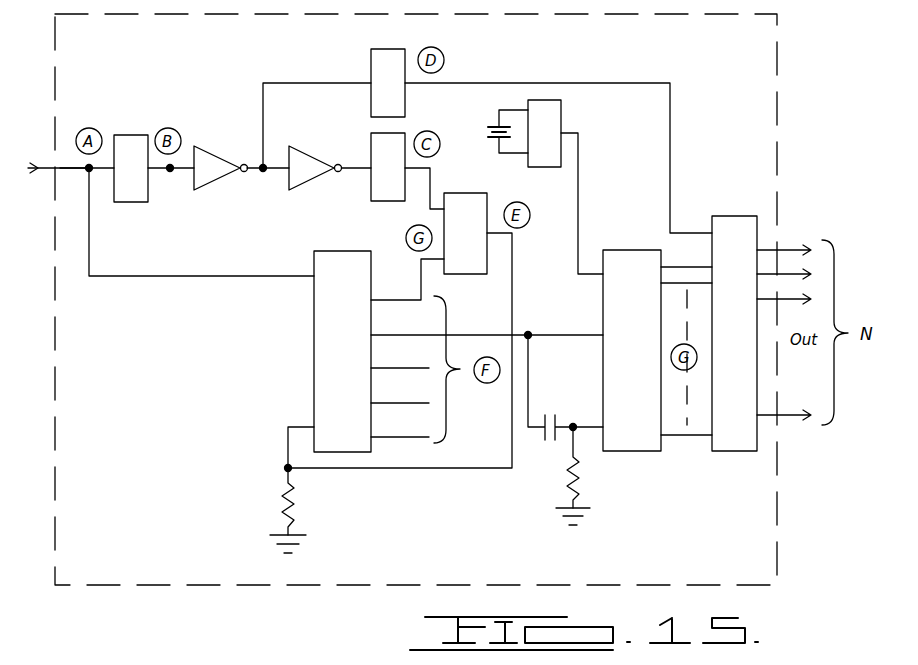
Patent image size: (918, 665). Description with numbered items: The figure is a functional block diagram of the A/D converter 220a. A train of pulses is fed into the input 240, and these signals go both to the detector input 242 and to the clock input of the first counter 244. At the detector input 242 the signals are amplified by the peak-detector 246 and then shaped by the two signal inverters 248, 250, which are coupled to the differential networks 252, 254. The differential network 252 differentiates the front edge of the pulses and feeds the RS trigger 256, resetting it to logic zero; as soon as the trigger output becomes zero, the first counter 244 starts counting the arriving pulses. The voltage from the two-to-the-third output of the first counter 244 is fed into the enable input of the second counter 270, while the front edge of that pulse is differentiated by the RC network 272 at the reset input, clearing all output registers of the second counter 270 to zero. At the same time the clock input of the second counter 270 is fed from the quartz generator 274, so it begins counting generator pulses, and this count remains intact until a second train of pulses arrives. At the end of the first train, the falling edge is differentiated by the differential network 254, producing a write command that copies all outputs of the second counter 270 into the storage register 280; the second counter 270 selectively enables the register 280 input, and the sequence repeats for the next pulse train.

The A/D converter 220a is at (780, 87).
The input 240 is at (36, 169).
The detector input 242 is at (76, 170).
The counter 244 is at (314, 372).
The peak-detector 246 is at (138, 203).
The signal inverter 248 is at (220, 176).
The signal inverter 250 is at (306, 176).
The differential network 252 is at (371, 66).
The differential network 254 is at (371, 144).
The RS trigger 256 is at (468, 197).
The second counter 270 is at (628, 452).
The RC network 272 is at (546, 444).
The quartz generator 274 is at (561, 122).
The storage register 280 is at (733, 452).